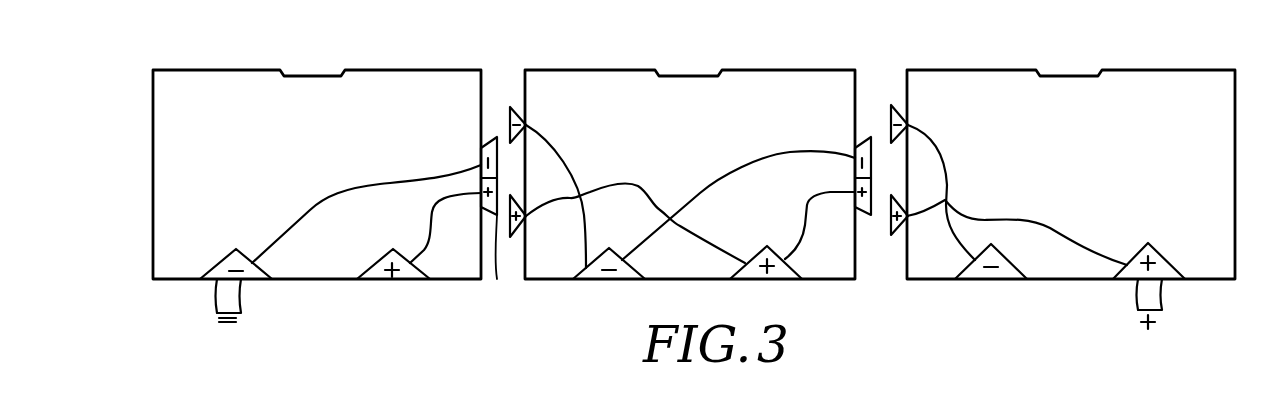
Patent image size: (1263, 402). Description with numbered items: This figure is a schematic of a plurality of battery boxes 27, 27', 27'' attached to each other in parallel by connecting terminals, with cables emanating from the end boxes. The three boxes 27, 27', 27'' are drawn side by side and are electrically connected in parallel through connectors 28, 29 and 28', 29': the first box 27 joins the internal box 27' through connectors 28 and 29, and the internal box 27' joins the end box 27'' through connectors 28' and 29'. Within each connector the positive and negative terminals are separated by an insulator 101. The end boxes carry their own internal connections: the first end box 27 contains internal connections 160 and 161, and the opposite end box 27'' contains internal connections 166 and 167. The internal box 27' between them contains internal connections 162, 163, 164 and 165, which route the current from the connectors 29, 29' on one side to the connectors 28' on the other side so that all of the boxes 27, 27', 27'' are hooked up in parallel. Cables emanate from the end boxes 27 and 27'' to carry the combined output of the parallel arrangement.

The battery box 27 is at (317, 178).
The battery box 27' is at (690, 155).
The battery box 27'' is at (1071, 178).
The connector 28 is at (653, 104).
The connector 28' is at (649, 246).
The connector 29 is at (716, 88).
The connector 29' is at (694, 263).
The insulator 101 is at (497, 140).
The internal connection 160 is at (318, 205).
The internal connection 161 is at (432, 222).
The internal connection 162 is at (560, 155).
The internal connection 163 is at (655, 200).
The internal connection 164 is at (790, 150).
The internal connection 165 is at (812, 200).
The internal connection 166 is at (947, 178).
The internal connection 167 is at (1080, 237).